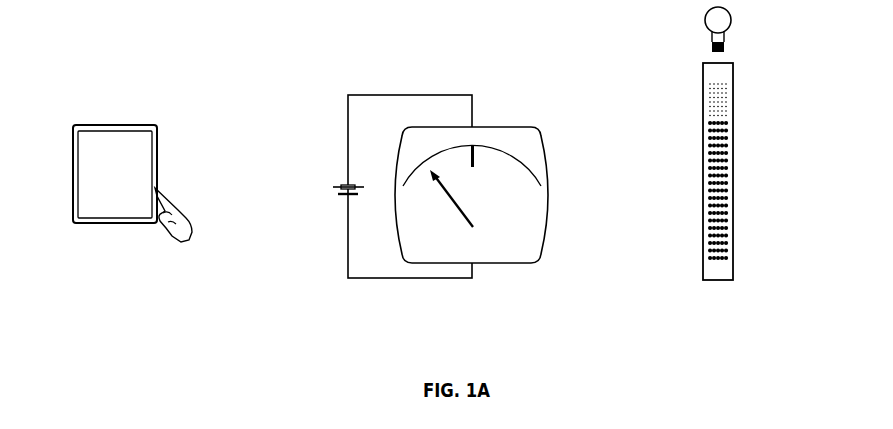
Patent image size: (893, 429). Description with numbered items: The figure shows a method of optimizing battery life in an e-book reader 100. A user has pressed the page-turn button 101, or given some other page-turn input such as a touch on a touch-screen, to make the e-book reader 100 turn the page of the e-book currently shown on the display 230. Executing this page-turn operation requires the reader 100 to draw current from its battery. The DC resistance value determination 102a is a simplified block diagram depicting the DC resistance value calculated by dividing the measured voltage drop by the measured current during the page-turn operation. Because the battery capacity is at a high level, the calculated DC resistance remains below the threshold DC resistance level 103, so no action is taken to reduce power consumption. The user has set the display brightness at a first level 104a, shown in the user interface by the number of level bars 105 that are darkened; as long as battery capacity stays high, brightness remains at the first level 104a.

The e-book reader 100 is at (157, 140).
The page-turn button 101 is at (155, 188).
The display 230 is at (113, 173).
The DC resistance value determination 102a is at (407, 211).
The threshold DC resistance level 103 is at (474, 157).
The first level 104a is at (710, 166).
The level bars 105 is at (733, 123).